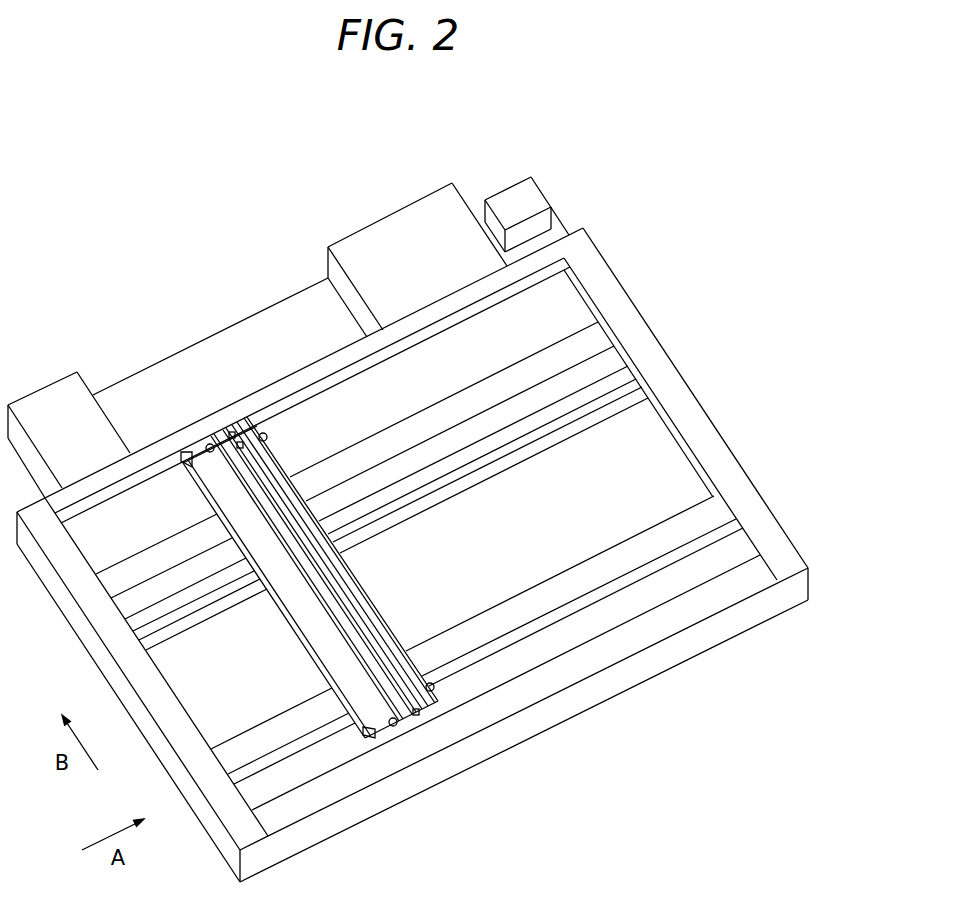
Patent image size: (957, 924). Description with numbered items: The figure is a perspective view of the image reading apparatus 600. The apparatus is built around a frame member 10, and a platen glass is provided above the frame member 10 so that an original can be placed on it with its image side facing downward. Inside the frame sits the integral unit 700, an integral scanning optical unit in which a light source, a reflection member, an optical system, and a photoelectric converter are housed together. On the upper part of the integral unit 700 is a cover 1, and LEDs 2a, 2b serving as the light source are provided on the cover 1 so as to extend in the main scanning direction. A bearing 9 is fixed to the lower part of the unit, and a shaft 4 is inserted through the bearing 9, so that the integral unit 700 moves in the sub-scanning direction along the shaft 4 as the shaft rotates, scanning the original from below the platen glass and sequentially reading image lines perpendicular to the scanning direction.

The image reading apparatus 600 is at (273, 222).
The integral unit 700 is at (387, 593).
The cover 1 is at (374, 654).
The LED 2a is at (405, 708).
The LED 2b is at (432, 700).
The shaft 4 is at (620, 398).
The bearing 9 is at (592, 385).
The frame member 10 is at (730, 465).